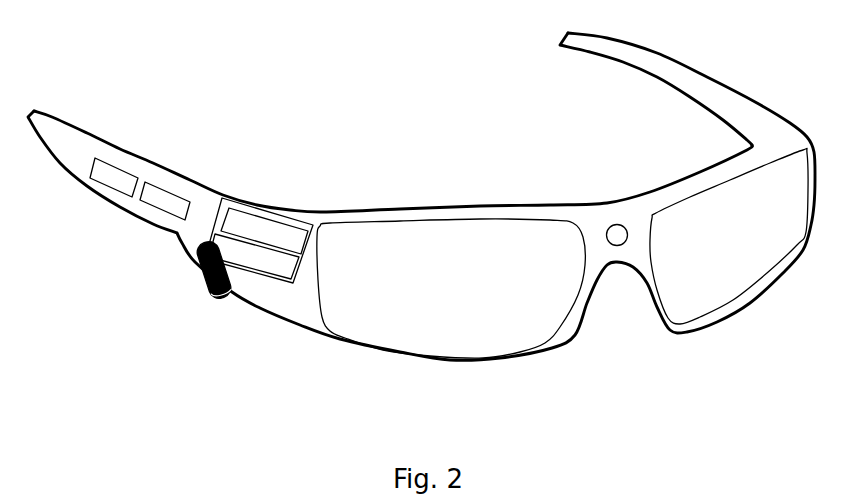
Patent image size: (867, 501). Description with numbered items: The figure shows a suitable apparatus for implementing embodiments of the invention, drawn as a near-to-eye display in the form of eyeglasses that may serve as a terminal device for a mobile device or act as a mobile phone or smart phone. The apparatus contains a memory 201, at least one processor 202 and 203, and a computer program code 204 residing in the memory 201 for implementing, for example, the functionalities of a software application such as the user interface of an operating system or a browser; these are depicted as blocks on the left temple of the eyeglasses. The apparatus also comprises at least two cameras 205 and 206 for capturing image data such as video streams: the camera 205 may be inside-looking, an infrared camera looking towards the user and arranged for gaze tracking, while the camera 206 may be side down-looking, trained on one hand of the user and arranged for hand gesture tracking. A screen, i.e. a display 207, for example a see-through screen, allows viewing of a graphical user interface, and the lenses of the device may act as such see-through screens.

The memory 201 is at (232, 208).
The processor 202 is at (122, 163).
The processor 203 is at (173, 193).
The computer program code 204 is at (290, 288).
The camera 205 is at (618, 224).
The camera 206 is at (196, 262).
The display 207 is at (454, 321).